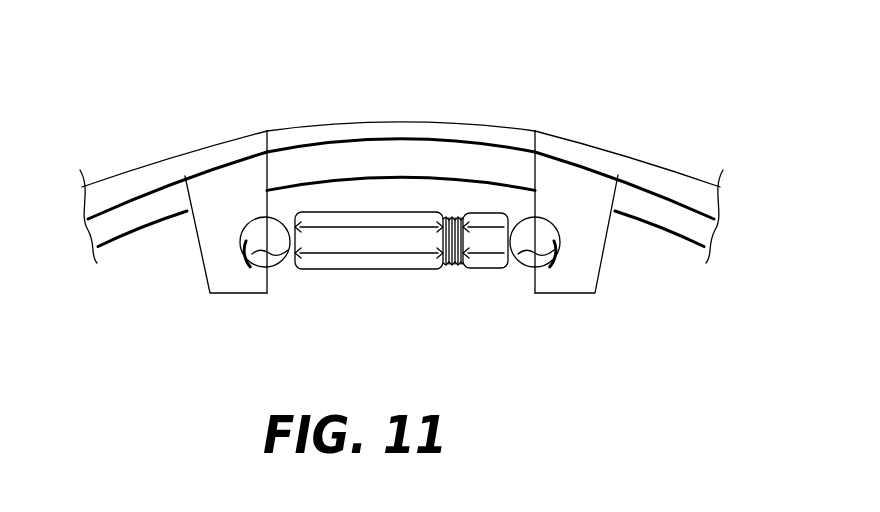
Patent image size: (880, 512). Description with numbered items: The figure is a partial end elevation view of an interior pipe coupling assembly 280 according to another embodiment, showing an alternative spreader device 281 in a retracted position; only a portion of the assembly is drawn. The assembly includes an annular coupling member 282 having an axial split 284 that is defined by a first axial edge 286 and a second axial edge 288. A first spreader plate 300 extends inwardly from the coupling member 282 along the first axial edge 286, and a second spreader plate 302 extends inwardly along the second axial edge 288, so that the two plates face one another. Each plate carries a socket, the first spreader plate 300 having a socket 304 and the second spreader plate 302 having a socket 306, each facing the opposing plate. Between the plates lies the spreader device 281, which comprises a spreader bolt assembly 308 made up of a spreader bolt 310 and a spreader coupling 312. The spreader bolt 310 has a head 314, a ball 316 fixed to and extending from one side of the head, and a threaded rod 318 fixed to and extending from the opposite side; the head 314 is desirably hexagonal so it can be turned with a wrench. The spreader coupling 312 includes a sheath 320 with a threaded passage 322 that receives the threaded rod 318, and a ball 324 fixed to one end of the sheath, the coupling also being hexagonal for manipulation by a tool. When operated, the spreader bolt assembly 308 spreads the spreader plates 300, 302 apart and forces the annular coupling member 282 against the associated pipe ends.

The interior pipe coupling assembly 280 is at (401, 140).
The spreader device 281 is at (405, 280).
The annular coupling member 282 is at (148, 155).
The axial split 284 is at (284, 296).
The first axial edge 286 is at (266, 130).
The second axial edge 288 is at (536, 130).
The first spreader plate 300 is at (202, 256).
The second spreader plate 302 is at (601, 274).
The socket 304 is at (245, 224).
The socket 306 is at (556, 224).
The spreader bolt assembly 308 is at (369, 254).
The spreader bolt 310 is at (497, 283).
The spreader coupling 312 is at (323, 280).
The head 314 is at (472, 270).
The ball 316 is at (537, 242).
The threaded rod 318 is at (462, 259).
The sheath 320 is at (372, 243).
The threaded passage 322 is at (449, 264).
The ball 324 is at (270, 242).